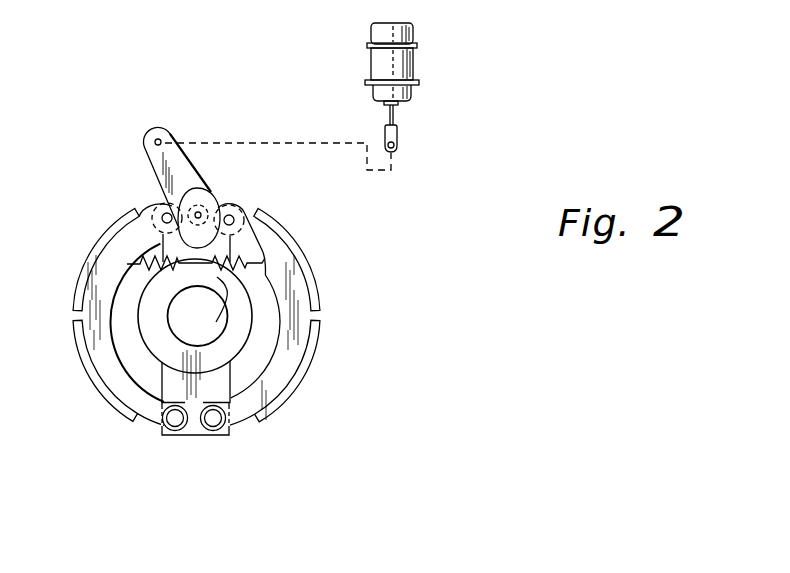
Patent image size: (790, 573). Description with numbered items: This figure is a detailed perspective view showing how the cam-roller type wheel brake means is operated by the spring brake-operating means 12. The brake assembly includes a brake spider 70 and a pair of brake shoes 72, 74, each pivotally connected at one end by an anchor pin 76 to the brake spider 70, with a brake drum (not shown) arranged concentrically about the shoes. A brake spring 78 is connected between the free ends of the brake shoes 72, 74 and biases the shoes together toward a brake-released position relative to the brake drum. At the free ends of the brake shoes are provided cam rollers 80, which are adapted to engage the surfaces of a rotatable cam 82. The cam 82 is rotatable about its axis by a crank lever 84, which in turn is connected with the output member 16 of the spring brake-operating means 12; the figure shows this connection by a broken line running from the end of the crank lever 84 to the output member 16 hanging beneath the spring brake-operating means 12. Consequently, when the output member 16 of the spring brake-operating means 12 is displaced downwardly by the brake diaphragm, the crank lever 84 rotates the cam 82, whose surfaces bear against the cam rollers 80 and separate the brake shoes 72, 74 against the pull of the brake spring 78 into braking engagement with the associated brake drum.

The spring brake-operating means 12 is at (428, 59).
The output member 16 is at (395, 114).
The brake spider 70 is at (157, 336).
The brake shoe 72 is at (76, 356).
The brake shoe 74 is at (315, 350).
The anchor pin 76 is at (206, 427).
The brake spring 78 is at (210, 310).
The cam roller 80 is at (152, 230).
The rotatable cam 82 is at (213, 191).
The crank lever 84 is at (167, 167).